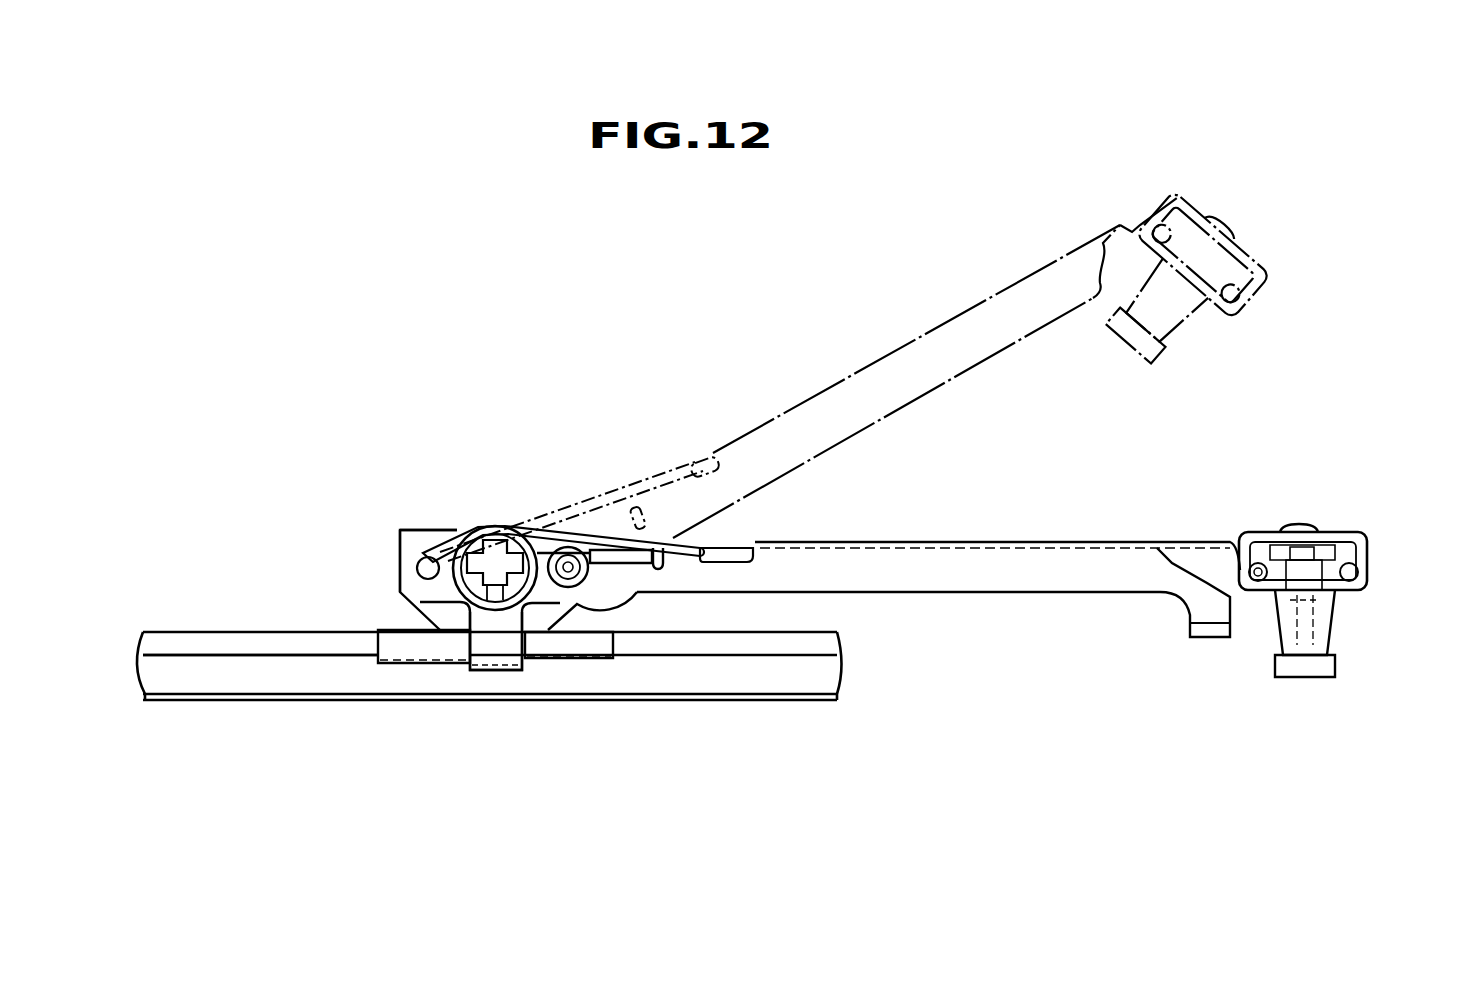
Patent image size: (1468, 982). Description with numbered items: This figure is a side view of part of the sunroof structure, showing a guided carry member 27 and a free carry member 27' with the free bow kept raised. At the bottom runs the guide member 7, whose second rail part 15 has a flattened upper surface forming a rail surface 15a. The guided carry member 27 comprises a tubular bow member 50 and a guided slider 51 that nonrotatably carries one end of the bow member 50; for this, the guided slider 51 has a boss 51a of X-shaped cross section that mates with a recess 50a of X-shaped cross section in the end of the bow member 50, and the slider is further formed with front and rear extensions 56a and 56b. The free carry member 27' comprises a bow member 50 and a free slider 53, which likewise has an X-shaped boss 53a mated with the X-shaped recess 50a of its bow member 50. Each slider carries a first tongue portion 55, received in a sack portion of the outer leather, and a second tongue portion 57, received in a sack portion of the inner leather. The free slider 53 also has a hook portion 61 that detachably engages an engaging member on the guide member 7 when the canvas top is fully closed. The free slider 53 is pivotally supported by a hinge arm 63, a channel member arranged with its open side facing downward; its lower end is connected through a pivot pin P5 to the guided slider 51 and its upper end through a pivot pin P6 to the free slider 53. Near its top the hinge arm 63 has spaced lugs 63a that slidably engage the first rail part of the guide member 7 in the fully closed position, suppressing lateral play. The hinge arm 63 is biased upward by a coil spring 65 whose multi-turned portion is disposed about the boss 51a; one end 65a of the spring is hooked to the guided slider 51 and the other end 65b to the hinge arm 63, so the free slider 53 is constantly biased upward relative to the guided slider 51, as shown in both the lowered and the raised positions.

The guide member 7 is at (742, 705).
The second rail part 15 is at (207, 684).
The rail surface 15a is at (265, 660).
The guided carry member 27 is at (531, 510).
The free carry member 27' is at (1286, 376).
The bow member 50 is at (509, 537).
The recess 50a is at (498, 618).
The guided slider 51 is at (413, 528).
The boss 51a is at (480, 546).
The free slider 53 is at (1245, 531).
The X-shaped boss 53a is at (1357, 573).
The first tongue portion 55 is at (1325, 535).
The front extension 56a is at (405, 645).
The rear extension 56b is at (598, 650).
The second tongue portion 57 is at (1305, 678).
The hook portion 61 is at (1325, 622).
The hinge arm 63 is at (980, 565).
The lugs 63a is at (1205, 638).
The coil spring 65 is at (560, 540).
The one end of the spring 65a is at (424, 555).
The other end of the spring 65b is at (735, 547).
The pivot pin P5 is at (570, 560).
The pivot pin P6 is at (1256, 580).